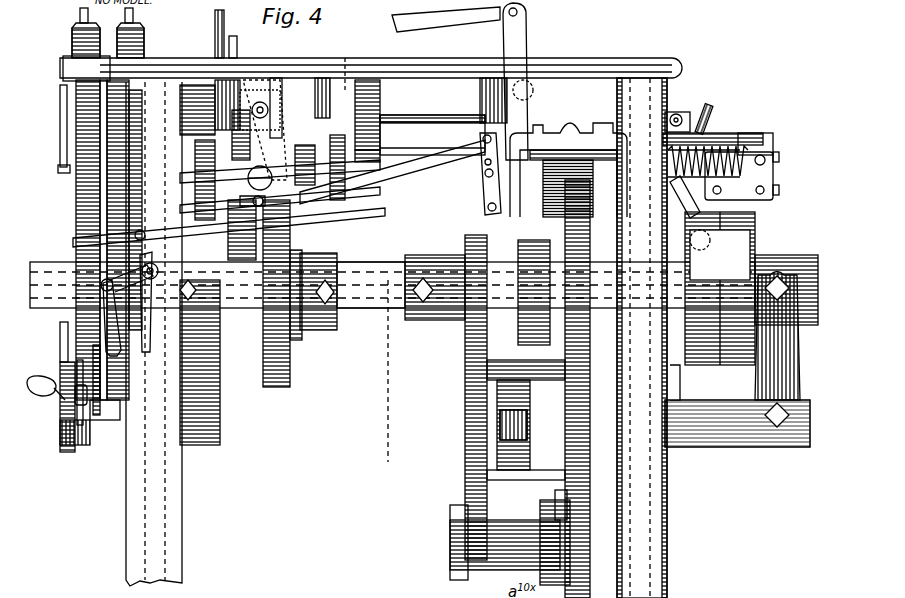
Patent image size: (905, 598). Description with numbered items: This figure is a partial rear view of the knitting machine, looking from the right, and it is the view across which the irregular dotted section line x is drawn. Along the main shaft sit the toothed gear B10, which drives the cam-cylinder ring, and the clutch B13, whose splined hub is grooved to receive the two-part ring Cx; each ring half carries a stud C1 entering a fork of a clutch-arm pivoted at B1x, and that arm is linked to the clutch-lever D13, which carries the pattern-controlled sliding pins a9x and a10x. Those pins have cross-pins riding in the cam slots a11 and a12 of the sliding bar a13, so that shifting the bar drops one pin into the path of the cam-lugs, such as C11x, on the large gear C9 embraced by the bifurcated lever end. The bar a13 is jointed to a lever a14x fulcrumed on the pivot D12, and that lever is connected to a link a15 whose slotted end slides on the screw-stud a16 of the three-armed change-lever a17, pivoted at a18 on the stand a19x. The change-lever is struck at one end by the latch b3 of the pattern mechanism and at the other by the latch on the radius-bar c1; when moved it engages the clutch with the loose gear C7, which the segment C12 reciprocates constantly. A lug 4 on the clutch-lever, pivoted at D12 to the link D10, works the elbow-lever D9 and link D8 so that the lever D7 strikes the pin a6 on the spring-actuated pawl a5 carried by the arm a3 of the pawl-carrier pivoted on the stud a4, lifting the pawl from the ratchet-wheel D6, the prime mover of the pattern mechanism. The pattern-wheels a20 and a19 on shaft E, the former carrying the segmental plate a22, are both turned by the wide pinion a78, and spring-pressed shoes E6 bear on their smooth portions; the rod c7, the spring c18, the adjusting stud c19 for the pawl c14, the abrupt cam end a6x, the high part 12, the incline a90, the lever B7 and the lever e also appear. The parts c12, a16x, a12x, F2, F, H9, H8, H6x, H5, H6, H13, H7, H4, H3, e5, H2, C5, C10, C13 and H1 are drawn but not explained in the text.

The rod c7 is at (215, 19).
The radius-bar c1 is at (200, 135).
The pivot c12 is at (260, 102).
The adjusting stud c19 is at (278, 78).
The spring-pressed brakes or shoes E6 is at (80, 92).
The toothed pattern-wheel a20 is at (95, 120).
The second pattern-wheel a19 is at (115, 143).
The smooth peripheral portion a19x is at (133, 155).
The spring c18 is at (195, 188).
The pivot a18 is at (260, 166).
The bar a16x is at (322, 75).
The irregular dotted line x is at (364, 263).
The block a12x is at (395, 140).
The lever a14x is at (485, 157).
The inclined or cam slot a11 is at (500, 135).
The clutch-lever D13 is at (575, 132).
The handle bar F2 is at (463, 20).
The lever F is at (522, 34).
The lever B7 is at (485, 115).
The pivot B1x is at (533, 133).
The sliding pin a9x is at (550, 132).
The sliding pin a10x is at (615, 135).
The inclined or cam slot a12 is at (622, 138).
The sliding bar a13 is at (627, 145).
The screw-stud a16 is at (335, 132).
The change-lever a17 is at (328, 142).
The inclined part a90 is at (365, 150).
The latch b3 is at (380, 175).
The stud a4 is at (432, 150).
The link a15 is at (430, 180).
The screw H9 is at (712, 125).
The bar H8 is at (732, 148).
The block H6x is at (760, 138).
The block H5 is at (772, 142).
The spring housing H6 is at (780, 162).
The bearing H13 is at (750, 212).
The column H7 is at (642, 214).
The gear H4 is at (752, 244).
The column H3 is at (690, 337).
The segmental plate a22 is at (80, 241).
The wide pinion a78 is at (65, 325).
The link D8 is at (62, 360).
The elbow-lever D9 is at (146, 300).
The spring-controlled pawl c14 is at (240, 312).
The ratchet-wheel D6 is at (62, 410).
The spring-actuated pawl a5 is at (68, 450).
The pin a6 is at (90, 440).
The arm a3 is at (84, 455).
The lever D7 is at (118, 416).
The toothed gear B10 is at (263, 394).
The high part 12 is at (365, 246).
The pivot D12 is at (432, 258).
The lug 4 is at (488, 223).
The abrupt end a6x is at (352, 252).
The link D10 is at (400, 262).
The lever e is at (330, 322).
The part e5 is at (336, 336).
The shaft H2 is at (372, 308).
The gear C5 is at (405, 312).
The loose gear C7 is at (468, 312).
The stud C1 is at (520, 310).
The clutch B13 is at (522, 348).
The two-part ring Cx is at (541, 348).
The segment C12 is at (470, 422).
The roller C10 is at (518, 474).
The shaft C13 is at (452, 543).
The large gear C9 is at (600, 490).
The column H1 is at (658, 518).
The cam-lug C11x is at (650, 588).